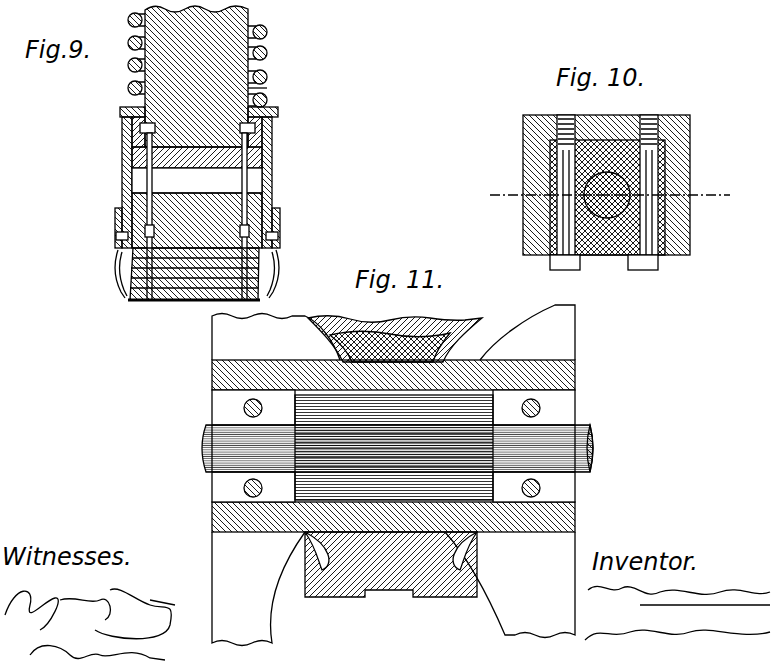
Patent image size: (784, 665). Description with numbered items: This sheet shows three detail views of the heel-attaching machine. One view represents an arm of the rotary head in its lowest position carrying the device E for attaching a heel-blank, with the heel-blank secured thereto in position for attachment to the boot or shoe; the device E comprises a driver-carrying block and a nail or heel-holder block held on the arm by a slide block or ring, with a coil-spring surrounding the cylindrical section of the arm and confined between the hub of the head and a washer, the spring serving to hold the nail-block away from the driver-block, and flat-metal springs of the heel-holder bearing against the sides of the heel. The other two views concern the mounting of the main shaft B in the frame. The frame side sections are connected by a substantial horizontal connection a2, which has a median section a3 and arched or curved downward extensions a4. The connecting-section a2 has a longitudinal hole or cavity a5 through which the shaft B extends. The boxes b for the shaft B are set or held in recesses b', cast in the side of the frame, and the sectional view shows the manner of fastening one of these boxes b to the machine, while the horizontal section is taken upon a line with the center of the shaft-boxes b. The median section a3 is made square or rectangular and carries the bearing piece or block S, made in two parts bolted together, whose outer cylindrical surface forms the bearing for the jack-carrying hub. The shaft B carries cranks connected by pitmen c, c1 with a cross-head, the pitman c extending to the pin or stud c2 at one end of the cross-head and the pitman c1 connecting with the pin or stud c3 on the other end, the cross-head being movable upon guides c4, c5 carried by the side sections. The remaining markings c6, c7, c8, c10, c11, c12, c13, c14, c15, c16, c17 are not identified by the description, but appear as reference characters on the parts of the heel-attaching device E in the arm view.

In FIG. 9, the pitman c is at (272, 158).
In FIG. 9, the pitman c1 is at (262, 178).
In FIG. 9, the pin or stud c2 is at (255, 198).
In FIG. 9, the pin or stud c3 is at (265, 224).
In FIG. 9, the guide c4 is at (122, 175).
In FIG. 9, the guide c5 is at (130, 137).
In FIG. 9, the hatched band c6 is at (132, 155).
In FIG. 9, the coil connection c7 is at (269, 86).
In FIG. 9, the spring coils c8 is at (267, 39).
In FIG. 9, the flange c10 is at (124, 107).
In FIG. 9, the bolt head c11 is at (138, 125).
In FIG. 9, the cup c12 is at (272, 264).
In FIG. 9, the lip end c13 is at (125, 296).
In FIG. 9, the lip c14 is at (130, 280).
In FIG. 9, the lip right c15 is at (259, 283).
In FIG. 9, the small nut c16 is at (116, 240).
In FIG. 9, the lip curve c17 is at (117, 262).
In FIG. 9, the heel-blank attaching device E is at (197, 180).
In FIG. 10, the horizontal connection a2 is at (658, 128).
In FIG. 11, the horizontal connection a2 is at (255, 532).
In FIG. 11, the median section a3 is at (395, 597).
In FIG. 11, the arched downward extensions a4 is at (393, 589).
In FIG. 11, the longitudinal hole or cavity a5 is at (394, 446).
In FIG. 10, the box b is at (562, 197).
In FIG. 11, the box b is at (391, 448).
In FIG. 10, the recess b' is at (605, 185).
In FIG. 11, the recess b' is at (393, 419).
In FIG. 10, the shaft B is at (607, 218).
In FIG. 11, the shaft B is at (397, 448).
In FIG. 11, the bearing piece or block S is at (332, 608).